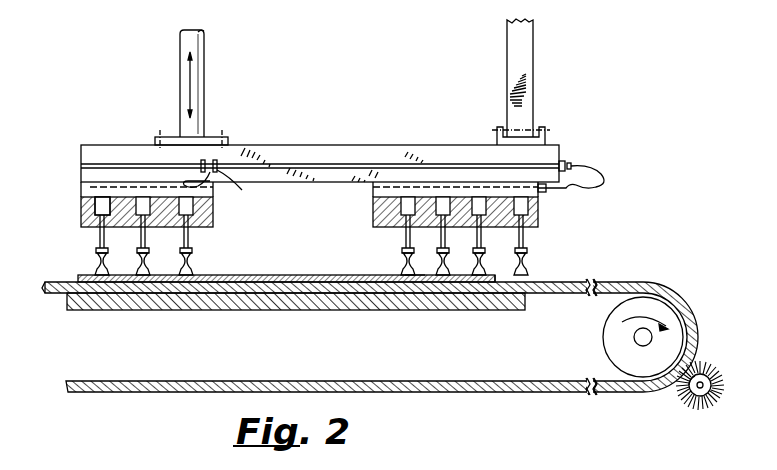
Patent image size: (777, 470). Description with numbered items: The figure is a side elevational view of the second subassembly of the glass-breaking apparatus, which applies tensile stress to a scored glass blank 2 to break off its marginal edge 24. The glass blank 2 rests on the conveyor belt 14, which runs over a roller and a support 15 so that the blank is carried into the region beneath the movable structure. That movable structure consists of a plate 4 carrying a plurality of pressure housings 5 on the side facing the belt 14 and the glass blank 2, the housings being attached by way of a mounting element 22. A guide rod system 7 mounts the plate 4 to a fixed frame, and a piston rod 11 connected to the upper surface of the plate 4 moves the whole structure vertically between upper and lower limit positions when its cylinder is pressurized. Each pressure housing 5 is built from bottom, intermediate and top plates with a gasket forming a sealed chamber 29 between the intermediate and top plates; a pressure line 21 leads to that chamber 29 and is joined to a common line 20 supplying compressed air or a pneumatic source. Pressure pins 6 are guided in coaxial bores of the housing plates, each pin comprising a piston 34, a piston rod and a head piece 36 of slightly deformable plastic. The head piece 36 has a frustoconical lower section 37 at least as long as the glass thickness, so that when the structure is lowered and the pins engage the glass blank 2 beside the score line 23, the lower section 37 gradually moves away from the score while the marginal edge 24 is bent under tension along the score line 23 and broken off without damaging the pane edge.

The glass blank 2 is at (295, 274).
The plate 4 is at (316, 145).
The pressure housing 5 is at (213, 217).
The pressure pin 6 is at (97, 233).
The guide rod system 7 is at (523, 62).
The piston rod 11 is at (188, 45).
The belt 14 is at (567, 380).
The support plate 15 is at (279, 300).
The line 20 is at (690, 404).
The pressure line 21 is at (222, 180).
The mounting plate 22 is at (124, 159).
The score line 23 is at (415, 274).
The marginal edge 24 is at (495, 275).
The chamber 29 is at (143, 190).
The piston 34 is at (100, 215).
The head piece 36 is at (95, 254).
The lower section 37 is at (100, 266).